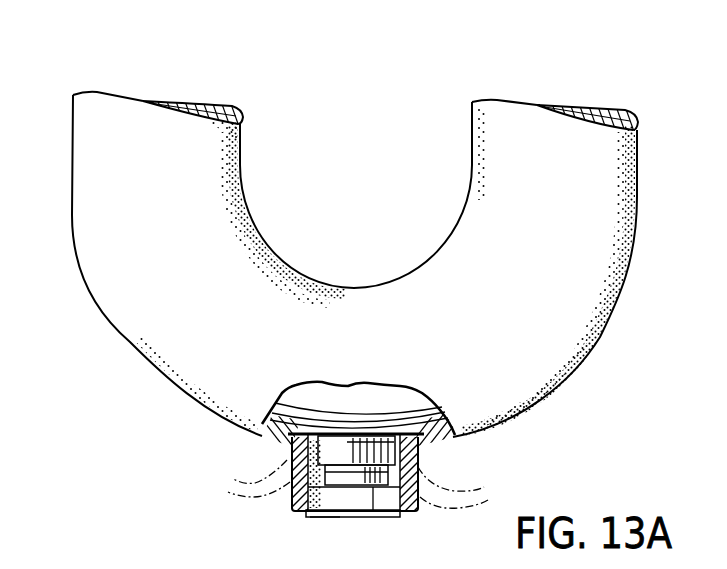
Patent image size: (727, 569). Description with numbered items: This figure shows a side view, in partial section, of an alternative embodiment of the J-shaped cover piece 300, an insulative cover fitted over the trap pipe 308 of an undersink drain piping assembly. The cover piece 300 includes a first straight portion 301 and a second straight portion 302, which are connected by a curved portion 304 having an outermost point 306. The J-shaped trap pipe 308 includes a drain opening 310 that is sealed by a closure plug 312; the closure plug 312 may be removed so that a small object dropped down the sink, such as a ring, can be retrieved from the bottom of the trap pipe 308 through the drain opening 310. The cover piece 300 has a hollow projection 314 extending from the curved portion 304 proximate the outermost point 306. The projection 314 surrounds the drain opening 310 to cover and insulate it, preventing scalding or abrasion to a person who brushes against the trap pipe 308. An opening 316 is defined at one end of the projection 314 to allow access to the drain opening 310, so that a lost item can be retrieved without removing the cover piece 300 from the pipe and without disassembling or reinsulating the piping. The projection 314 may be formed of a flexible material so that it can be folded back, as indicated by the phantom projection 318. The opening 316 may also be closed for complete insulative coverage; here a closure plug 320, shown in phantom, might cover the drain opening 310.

The cover piece 300 is at (205, 412).
The first straight portion 301 is at (243, 150).
The second straight portion 302 is at (471, 156).
The curved portion 304 is at (483, 428).
The outermost point 306 is at (338, 433).
The trap pipe 308 is at (318, 396).
The drain opening 310 is at (363, 477).
The closure plug 312 is at (375, 495).
The projection 314 is at (295, 498).
The opening 316 is at (313, 517).
The phantom projection 318 is at (228, 500).
The closure plug 320 is at (328, 519).